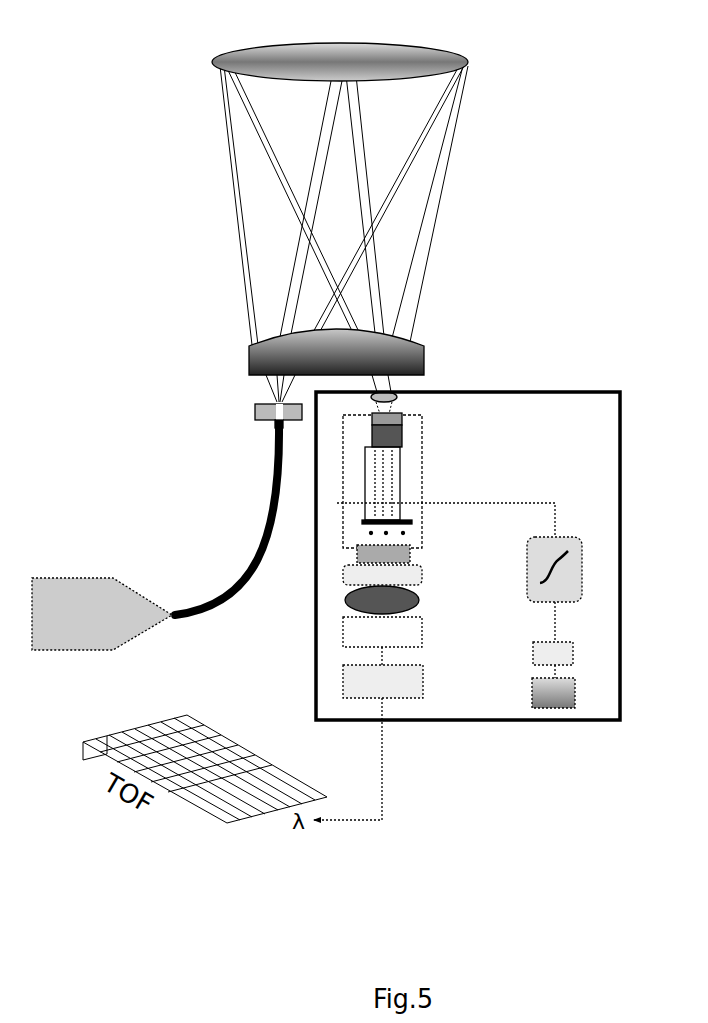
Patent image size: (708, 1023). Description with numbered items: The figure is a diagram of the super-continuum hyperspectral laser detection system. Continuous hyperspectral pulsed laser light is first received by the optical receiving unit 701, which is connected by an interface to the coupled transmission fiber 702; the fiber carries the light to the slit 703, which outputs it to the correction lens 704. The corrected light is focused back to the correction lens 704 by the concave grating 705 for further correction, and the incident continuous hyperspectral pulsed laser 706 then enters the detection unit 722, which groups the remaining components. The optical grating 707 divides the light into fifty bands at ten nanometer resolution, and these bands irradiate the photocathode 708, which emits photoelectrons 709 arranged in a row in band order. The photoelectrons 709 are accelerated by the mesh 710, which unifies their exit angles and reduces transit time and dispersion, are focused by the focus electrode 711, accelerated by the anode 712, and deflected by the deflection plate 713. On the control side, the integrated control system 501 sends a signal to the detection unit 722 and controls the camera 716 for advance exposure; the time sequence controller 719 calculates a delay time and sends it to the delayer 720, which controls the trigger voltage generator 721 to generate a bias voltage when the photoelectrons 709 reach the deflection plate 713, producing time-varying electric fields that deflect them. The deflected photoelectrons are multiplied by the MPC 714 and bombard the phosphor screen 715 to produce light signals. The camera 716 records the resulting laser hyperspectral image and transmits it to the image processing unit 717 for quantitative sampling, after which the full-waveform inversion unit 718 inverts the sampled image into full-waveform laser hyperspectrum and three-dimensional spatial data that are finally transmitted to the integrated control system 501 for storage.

The integrated control system 501 is at (490, 724).
The optical receiving unit 701 is at (128, 586).
The coupled transmission fiber 702 is at (252, 536).
The slit 703 is at (273, 401).
The correction lens 704 is at (247, 358).
The concave grating 705 is at (349, 43).
The incident continuous hyperspectral pulsed laser 706 is at (425, 373).
The optical grating 707 is at (400, 385).
The photocathode 708 is at (405, 418).
The photoelectrons 709 is at (405, 429).
The mesh 710 is at (403, 441).
The focus electrode 711 is at (363, 457).
The anode 712 is at (363, 490).
The deflection plate 713 is at (409, 500).
The MPC 714 is at (414, 522).
The phosphor screen 715 is at (412, 553).
The camera 716 is at (340, 578).
The image processing unit 717 is at (340, 636).
The full-waveform inversion unit 718 is at (340, 684).
The time sequence controller 719 is at (577, 693).
The delayer 720 is at (575, 652).
The trigger voltage generator 721 is at (584, 568).
The detection unit 722 is at (623, 492).